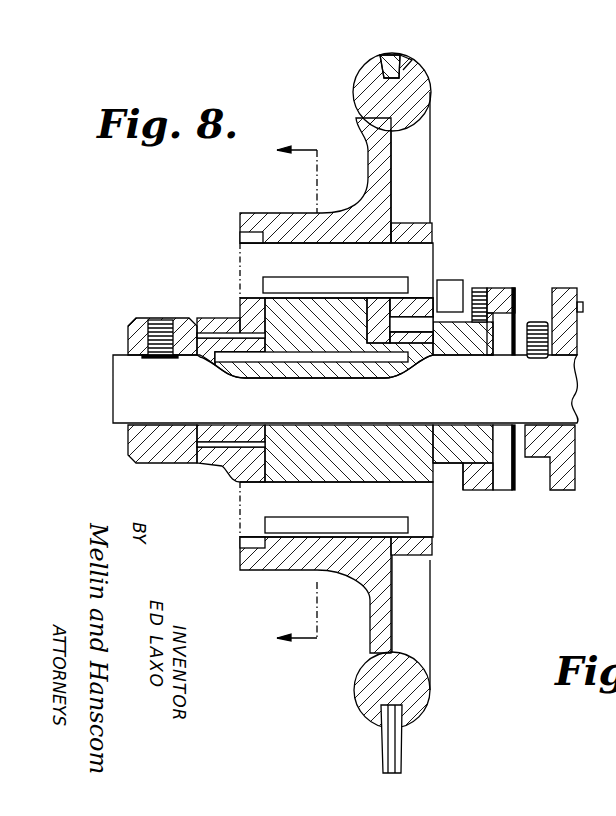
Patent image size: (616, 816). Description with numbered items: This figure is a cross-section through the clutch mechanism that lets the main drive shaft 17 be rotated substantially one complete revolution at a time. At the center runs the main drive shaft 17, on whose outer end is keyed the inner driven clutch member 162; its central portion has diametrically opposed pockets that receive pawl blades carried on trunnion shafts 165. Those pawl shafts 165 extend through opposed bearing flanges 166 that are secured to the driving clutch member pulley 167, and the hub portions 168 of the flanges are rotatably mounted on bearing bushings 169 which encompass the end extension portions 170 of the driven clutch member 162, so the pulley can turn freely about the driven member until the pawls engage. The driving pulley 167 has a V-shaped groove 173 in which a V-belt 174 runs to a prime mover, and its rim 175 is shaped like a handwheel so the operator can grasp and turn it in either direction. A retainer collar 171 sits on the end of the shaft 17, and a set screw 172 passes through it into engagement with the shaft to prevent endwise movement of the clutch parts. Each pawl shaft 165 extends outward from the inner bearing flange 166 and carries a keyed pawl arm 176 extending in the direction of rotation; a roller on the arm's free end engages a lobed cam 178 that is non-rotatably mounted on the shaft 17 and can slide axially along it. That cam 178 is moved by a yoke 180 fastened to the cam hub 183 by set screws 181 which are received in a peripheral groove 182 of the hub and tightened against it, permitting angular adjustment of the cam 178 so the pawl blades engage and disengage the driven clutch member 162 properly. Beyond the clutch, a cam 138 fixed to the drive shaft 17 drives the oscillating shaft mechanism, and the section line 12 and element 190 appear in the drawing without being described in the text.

The section line 12 is at (301, 400).
The main drive shaft 17 is at (113, 397).
The cam 138 is at (577, 468).
The inner driven clutch member 162 is at (318, 330).
The trunnion shaft 165 is at (418, 271).
The bearing flange 166 is at (243, 240).
The driving clutch member pulley 167 is at (393, 160).
The hub portion 168 is at (226, 318).
The bearing bushing 169 is at (201, 336).
The end extension portion 170 is at (213, 350).
The retainer collar 171 is at (127, 337).
The set screw 172 is at (157, 318).
The V-shaped groove 173 is at (412, 60).
The V-belt 174 is at (395, 55).
The rim 175 is at (432, 80).
The pawl arm 176 is at (433, 232).
The cam 178 is at (457, 468).
The yoke 180 is at (512, 288).
The set screw 181 is at (480, 288).
The peripheral groove 182 is at (483, 462).
The cam hub 183 is at (485, 445).
The pin 190 is at (584, 306).